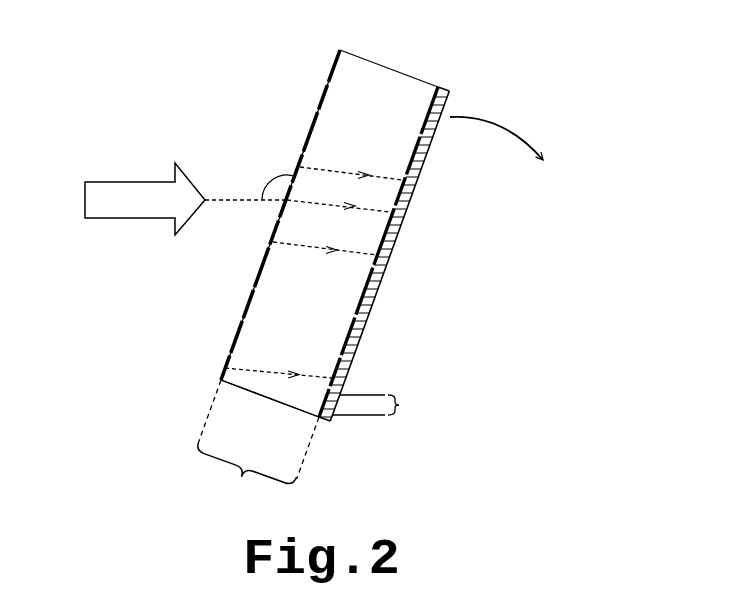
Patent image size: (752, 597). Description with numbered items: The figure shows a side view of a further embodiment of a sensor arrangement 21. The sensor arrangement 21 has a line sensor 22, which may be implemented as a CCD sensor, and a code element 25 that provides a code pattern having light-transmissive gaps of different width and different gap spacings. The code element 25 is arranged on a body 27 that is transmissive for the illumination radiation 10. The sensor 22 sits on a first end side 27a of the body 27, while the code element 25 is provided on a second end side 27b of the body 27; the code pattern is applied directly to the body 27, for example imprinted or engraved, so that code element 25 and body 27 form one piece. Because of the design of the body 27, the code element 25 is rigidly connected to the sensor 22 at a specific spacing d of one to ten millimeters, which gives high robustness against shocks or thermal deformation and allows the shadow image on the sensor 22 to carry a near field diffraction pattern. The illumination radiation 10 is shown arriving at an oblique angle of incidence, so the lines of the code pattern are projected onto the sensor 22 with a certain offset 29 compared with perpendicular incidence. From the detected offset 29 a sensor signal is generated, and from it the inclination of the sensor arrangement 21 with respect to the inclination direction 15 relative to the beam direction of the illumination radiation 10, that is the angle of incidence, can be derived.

The illumination radiation 10 is at (130, 193).
The inclination direction 15 is at (513, 128).
The sensor arrangement 21 is at (349, 248).
The line sensor 22 is at (383, 275).
The code element 25 is at (311, 96).
The body 27 is at (380, 77).
The first end side 27a is at (313, 410).
The second end side 27b is at (238, 316).
The offset 29 is at (385, 409).
The spacing d is at (245, 477).